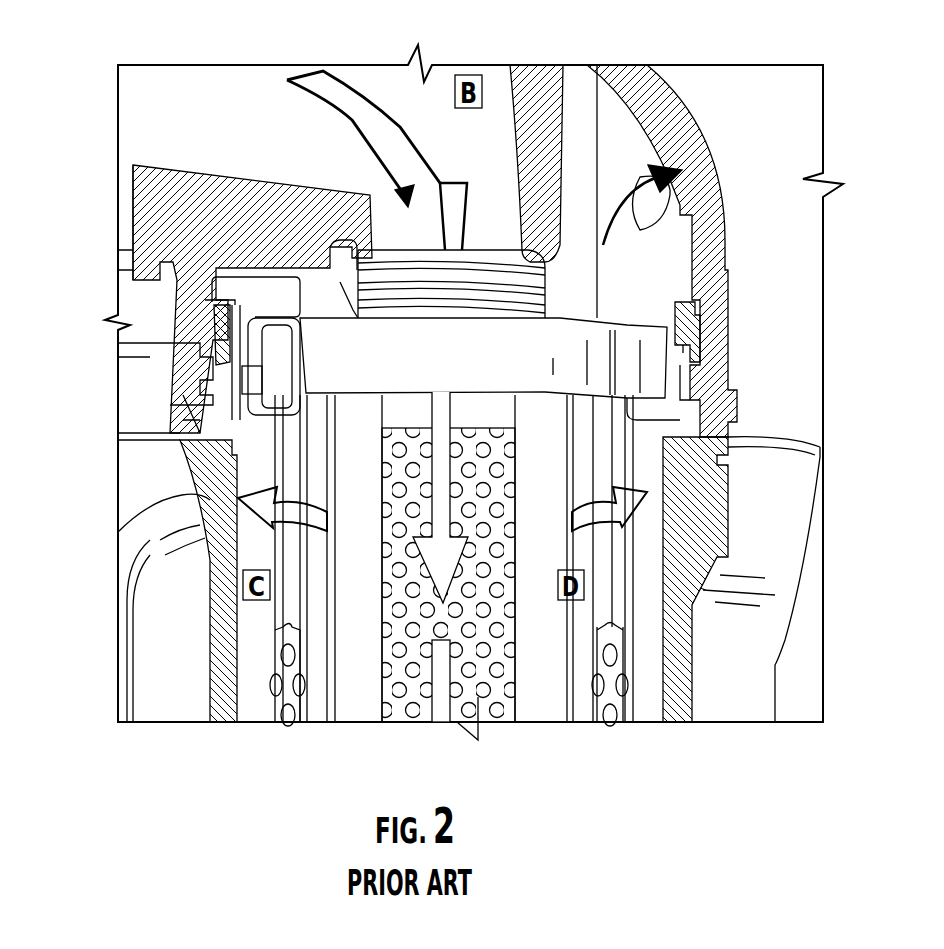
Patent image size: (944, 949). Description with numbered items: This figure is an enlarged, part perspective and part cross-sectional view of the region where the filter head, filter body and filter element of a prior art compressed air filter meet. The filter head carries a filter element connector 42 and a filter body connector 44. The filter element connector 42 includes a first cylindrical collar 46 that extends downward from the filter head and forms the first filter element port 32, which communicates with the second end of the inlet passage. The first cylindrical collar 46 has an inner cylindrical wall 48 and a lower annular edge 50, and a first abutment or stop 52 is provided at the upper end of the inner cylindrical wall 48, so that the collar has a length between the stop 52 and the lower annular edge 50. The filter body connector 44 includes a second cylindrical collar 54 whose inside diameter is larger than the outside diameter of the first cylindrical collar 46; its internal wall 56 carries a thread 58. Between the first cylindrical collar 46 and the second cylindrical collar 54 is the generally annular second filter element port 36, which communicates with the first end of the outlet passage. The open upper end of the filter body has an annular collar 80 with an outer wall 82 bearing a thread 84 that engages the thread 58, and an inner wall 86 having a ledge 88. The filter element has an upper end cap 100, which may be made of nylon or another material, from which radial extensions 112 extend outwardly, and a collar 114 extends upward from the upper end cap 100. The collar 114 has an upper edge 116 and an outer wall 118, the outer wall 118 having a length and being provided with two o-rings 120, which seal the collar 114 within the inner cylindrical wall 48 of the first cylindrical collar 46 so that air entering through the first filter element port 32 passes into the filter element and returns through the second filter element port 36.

The first filter element port 32 is at (345, 258).
The second filter element port 36 is at (245, 292).
The filter element connector 42 is at (330, 285).
The filter body connector 44 is at (183, 393).
The first cylindrical collar 46 is at (318, 262).
The inner cylindrical wall 48 is at (540, 280).
The lower annular edge 50 is at (348, 320).
The first abutment or stop 52 is at (348, 280).
The second cylindrical collar 54 is at (188, 362).
The internal wall 56 is at (700, 296).
The thread 58 is at (685, 335).
The annular collar 80 is at (150, 517).
The outer wall 82 is at (153, 480).
The thread 84 is at (200, 378).
The inner wall 86 is at (690, 480).
The ledge 88 is at (685, 355).
The upper end cap 100 is at (578, 353).
The radial extensions 112 is at (267, 378).
The collar 114 is at (457, 300).
The upper edge 116 is at (400, 225).
The outer wall 118 is at (450, 277).
The o-rings 120 is at (489, 248).